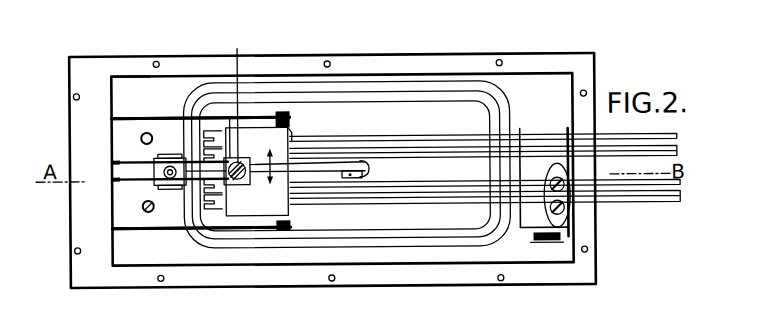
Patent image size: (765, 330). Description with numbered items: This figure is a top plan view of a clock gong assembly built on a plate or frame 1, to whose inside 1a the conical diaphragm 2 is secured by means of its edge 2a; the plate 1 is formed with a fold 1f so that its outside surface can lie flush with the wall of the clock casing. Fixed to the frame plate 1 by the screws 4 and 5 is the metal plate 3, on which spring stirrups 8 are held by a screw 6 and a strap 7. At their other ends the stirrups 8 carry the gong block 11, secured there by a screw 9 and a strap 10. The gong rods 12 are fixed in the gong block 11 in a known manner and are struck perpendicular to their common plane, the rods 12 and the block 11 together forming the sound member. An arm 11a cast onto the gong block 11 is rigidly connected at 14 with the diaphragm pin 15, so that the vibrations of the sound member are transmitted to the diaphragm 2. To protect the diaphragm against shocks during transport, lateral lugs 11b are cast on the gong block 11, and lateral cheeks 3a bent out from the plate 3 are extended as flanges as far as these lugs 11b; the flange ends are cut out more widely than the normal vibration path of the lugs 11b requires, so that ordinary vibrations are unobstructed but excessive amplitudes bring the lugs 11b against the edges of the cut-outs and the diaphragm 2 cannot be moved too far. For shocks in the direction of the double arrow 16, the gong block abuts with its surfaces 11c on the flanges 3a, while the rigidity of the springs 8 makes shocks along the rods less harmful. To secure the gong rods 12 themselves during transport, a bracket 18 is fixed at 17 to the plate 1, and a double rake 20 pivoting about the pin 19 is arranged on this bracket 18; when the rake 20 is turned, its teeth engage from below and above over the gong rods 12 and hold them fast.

The plate or frame 1 is at (514, 56).
The inside of the plate 1a is at (545, 102).
The fold 1f is at (128, 75).
The diaphragm 2 is at (417, 118).
The edge of the diaphragm 2a is at (465, 87).
The metal plate 3 is at (135, 214).
The lateral cheeks 3a is at (142, 115).
The screw 4 is at (142, 136).
The screw 5 is at (142, 205).
The screw 6 is at (163, 186).
The strap 7 is at (173, 177).
The spring stirrups 8 is at (118, 178).
The screw 9 is at (238, 95).
The strap 10 is at (226, 150).
The gong block 11 is at (237, 204).
The arm 11a is at (317, 167).
The lateral lugs 11b is at (283, 111).
The abutment surfaces 11c is at (291, 128).
The gong rods 12 is at (366, 163).
The rigid connection 14 is at (352, 175).
The diaphragm pin 15 is at (362, 180).
The double arrow 16 is at (270, 192).
The bracket securing point 17 is at (573, 218).
The bracket 18 is at (563, 240).
The pin 19 is at (545, 239).
The double rake 20 is at (528, 230).